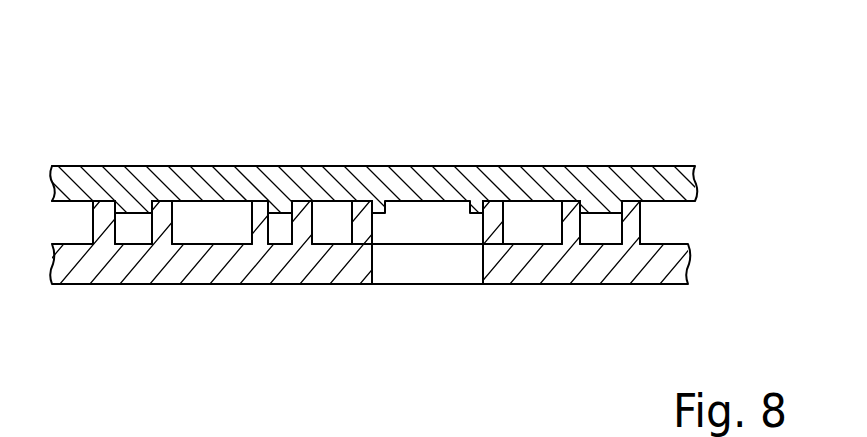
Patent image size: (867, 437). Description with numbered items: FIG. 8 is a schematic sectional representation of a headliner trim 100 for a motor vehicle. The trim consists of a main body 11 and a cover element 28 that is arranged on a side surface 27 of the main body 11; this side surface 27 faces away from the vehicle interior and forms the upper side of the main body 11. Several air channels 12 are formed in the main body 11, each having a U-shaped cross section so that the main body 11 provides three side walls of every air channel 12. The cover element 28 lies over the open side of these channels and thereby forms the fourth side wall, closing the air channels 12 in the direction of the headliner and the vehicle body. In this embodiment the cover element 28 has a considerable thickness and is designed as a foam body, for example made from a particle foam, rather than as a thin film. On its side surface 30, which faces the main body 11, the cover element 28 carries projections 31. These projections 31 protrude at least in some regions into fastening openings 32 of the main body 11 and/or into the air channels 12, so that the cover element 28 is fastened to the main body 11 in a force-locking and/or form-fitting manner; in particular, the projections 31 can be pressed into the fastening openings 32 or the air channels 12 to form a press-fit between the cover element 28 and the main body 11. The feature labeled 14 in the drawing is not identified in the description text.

The headliner trim 100 is at (137, 88).
The side surface of the main body 27 is at (100, 188).
The cover element 28 is at (243, 183).
The projections 31 is at (130, 211).
The main body 11 is at (150, 274).
The side surface of the cover element 30 is at (183, 203).
The air channels 12 is at (202, 212).
The fastening openings 32 is at (280, 213).
The opening 14 is at (413, 267).